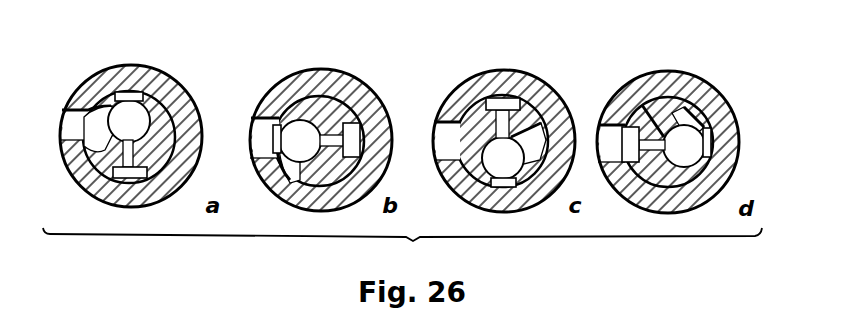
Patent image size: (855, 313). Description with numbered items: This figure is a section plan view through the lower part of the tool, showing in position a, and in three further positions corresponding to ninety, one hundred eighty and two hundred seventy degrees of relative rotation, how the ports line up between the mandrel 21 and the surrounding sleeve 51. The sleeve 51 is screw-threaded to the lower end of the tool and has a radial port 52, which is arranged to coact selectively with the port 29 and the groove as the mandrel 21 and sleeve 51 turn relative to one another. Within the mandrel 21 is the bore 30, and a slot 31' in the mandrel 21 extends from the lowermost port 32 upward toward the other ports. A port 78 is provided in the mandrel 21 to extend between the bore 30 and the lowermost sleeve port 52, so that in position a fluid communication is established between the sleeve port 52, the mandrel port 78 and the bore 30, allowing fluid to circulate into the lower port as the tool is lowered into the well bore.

The mandrel 21 is at (173, 115).
The port 29 is at (132, 92).
The bore 30 is at (140, 117).
The slot 31' is at (376, 128).
The lowermost port 32 is at (147, 157).
The sleeve 51 is at (83, 182).
The radial port 52 is at (67, 133).
The port 78 is at (95, 143).